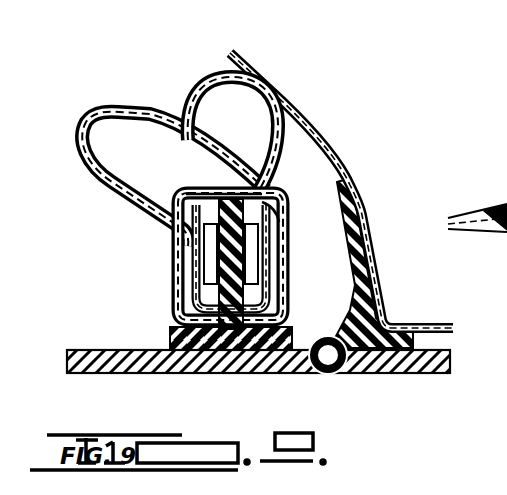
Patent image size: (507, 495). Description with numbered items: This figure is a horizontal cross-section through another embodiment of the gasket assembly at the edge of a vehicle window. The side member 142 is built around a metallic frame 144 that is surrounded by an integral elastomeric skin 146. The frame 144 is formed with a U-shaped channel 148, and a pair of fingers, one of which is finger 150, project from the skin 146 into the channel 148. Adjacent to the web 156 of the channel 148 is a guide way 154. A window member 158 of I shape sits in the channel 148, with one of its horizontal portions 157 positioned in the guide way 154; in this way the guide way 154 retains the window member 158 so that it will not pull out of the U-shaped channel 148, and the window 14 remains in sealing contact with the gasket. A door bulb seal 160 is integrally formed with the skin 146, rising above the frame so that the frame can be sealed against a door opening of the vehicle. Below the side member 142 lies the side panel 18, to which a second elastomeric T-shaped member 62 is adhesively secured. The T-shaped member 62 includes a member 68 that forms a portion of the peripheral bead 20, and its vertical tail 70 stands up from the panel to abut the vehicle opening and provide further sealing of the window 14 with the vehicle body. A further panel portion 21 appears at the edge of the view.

The window 14 is at (85, 351).
The side panel 18 is at (413, 372).
The peripheral bead 20 is at (309, 385).
The adjacent panel portion 21 is at (506, 308).
The second elastomeric T-shaped member 62 is at (426, 340).
The member 68 is at (330, 375).
The vertical tail 70 is at (346, 212).
The side member 142 is at (184, 186).
The metallic frame 144 is at (102, 188).
The integral elastomeric skin 146 is at (168, 228).
The U-shaped channel 148 is at (207, 264).
The finger 150 is at (210, 278).
The guide way 154 is at (280, 213).
The web 156 is at (212, 195).
The horizontal portion 157 is at (262, 198).
The window member 158 is at (278, 248).
The door bulb seal 160 is at (185, 120).